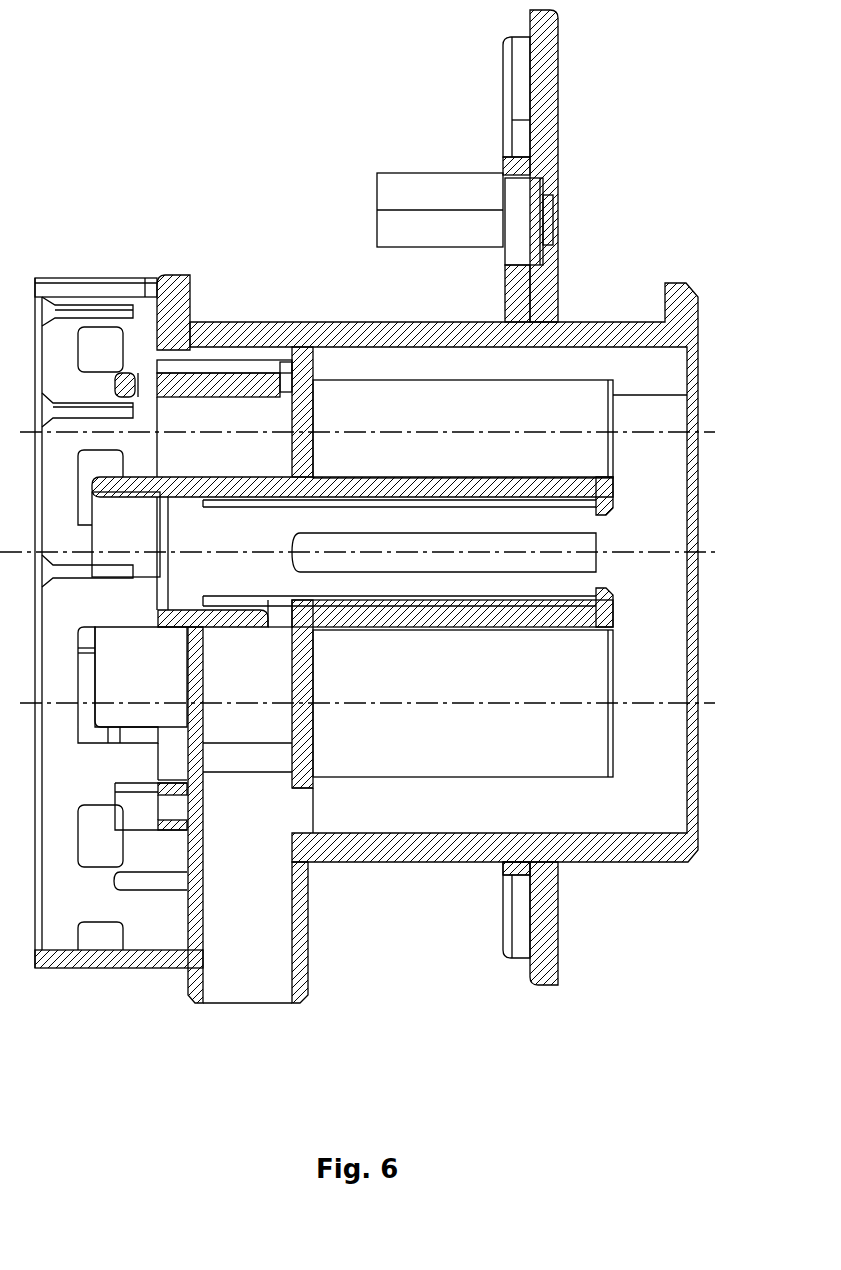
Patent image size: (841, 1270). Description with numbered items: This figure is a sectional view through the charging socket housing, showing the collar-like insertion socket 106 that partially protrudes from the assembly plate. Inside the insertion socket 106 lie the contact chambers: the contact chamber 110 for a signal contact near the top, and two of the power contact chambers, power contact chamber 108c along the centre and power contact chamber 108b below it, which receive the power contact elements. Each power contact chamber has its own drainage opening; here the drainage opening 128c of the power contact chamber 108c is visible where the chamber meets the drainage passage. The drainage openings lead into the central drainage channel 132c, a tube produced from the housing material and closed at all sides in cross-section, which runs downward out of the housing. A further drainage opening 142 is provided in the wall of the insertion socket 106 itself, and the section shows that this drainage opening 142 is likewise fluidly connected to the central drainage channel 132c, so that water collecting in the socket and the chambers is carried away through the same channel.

The insertion socket 106 is at (665, 850).
The contact chamber for the signal contacts 110 is at (583, 418).
The power contact chamber 108c is at (583, 560).
The power contact chamber 108b is at (583, 733).
The drainage opening 128c is at (280, 612).
The drainage opening 142 is at (300, 803).
The central drainage channel 132c is at (268, 990).